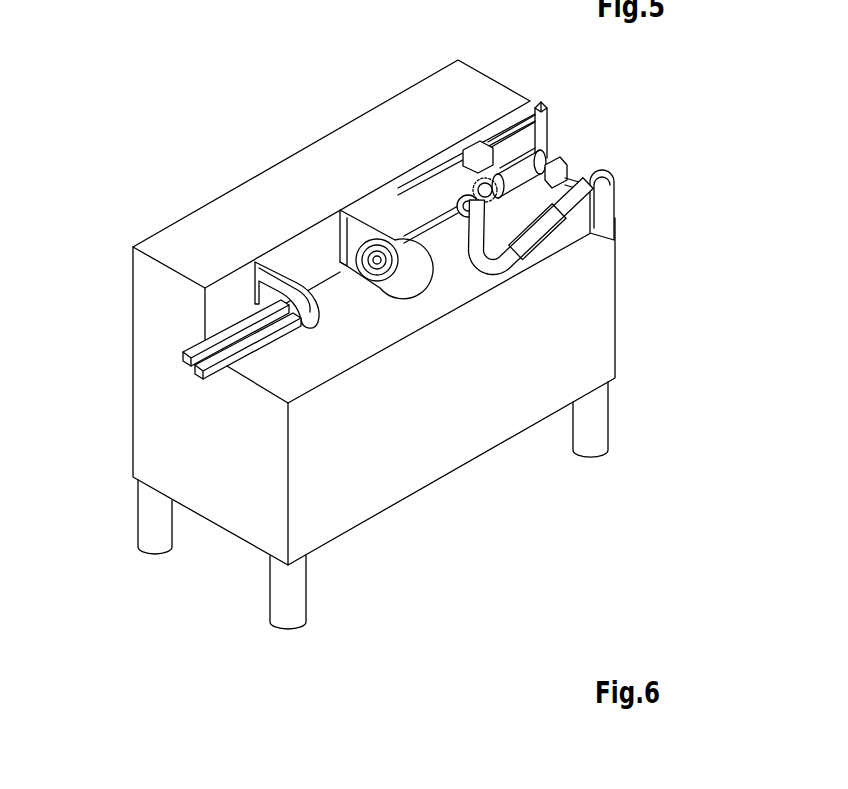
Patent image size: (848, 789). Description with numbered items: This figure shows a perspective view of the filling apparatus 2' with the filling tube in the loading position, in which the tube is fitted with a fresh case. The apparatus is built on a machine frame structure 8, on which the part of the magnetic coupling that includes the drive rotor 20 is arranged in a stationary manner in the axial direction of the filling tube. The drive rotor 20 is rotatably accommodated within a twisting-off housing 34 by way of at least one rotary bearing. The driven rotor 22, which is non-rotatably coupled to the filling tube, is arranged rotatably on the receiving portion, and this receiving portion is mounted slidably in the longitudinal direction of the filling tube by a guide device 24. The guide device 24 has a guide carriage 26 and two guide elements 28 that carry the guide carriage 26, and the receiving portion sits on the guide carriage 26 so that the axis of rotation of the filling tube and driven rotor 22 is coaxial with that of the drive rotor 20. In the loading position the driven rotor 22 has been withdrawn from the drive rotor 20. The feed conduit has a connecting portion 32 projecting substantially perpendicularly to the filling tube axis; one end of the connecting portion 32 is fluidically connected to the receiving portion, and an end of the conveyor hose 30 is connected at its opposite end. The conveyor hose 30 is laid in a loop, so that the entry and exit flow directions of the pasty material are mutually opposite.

The filling apparatus 2' is at (420, 317).
The machine frame structure 8 is at (600, 325).
The drive rotor 20 is at (377, 270).
The driven rotor 22 is at (482, 197).
The guide device 24 is at (491, 128).
The guide carriage 26 is at (476, 163).
The guide elements 28 is at (540, 132).
The conveyor hose 30 is at (528, 240).
The connecting portion 32 is at (550, 161).
The twisting-off housing 34 is at (352, 307).